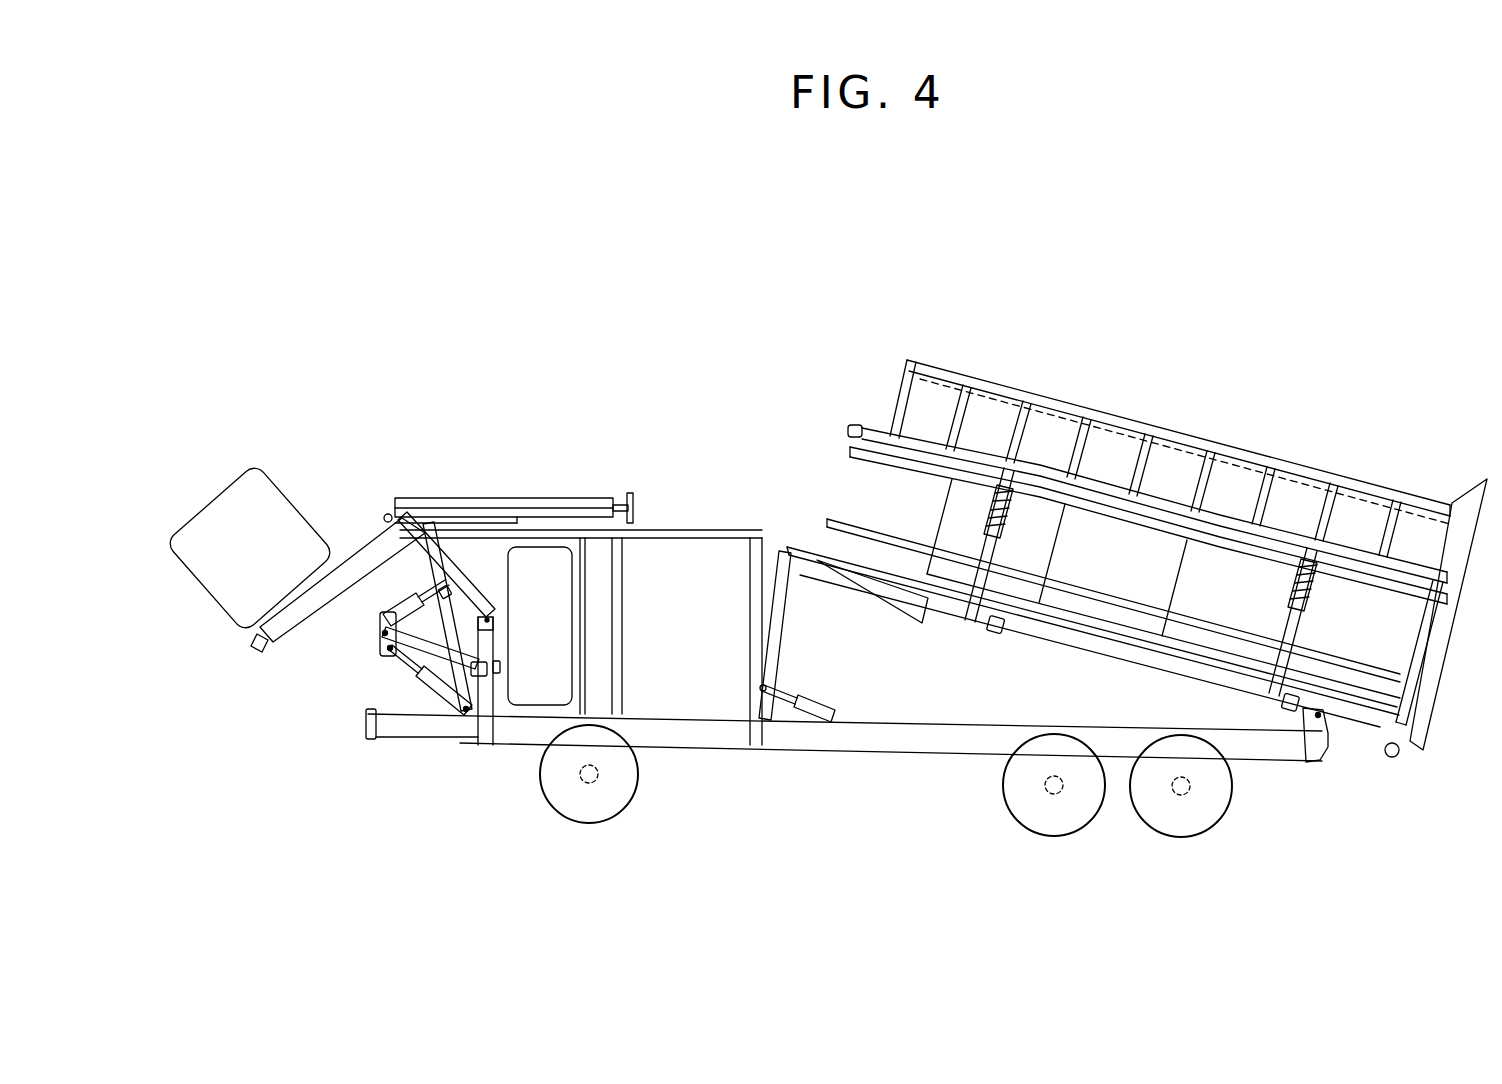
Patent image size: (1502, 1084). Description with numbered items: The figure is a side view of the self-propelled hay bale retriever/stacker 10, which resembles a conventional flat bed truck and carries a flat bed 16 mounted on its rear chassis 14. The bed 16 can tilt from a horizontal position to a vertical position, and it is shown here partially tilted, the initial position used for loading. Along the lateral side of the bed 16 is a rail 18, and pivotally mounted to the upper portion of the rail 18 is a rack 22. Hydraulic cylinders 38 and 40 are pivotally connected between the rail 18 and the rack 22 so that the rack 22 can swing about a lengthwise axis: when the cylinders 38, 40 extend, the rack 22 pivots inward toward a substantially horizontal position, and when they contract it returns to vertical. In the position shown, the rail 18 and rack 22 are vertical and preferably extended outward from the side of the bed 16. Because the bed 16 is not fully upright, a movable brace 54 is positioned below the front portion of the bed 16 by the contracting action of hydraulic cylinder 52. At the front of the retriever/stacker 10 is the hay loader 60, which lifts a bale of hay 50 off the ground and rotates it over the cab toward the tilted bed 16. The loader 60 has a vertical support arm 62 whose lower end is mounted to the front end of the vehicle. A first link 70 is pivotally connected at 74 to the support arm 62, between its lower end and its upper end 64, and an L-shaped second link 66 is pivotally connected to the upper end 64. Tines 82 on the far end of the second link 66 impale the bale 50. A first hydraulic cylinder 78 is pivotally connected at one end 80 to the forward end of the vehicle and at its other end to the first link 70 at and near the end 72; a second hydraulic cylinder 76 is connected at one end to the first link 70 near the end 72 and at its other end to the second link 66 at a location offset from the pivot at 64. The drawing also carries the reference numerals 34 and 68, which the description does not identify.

The self-propelled hay bale retriever/stacker 10 is at (736, 300).
The rear chassis 14 is at (847, 740).
The flat bed 16 is at (1240, 680).
The rail 18 is at (1073, 587).
The rack 22 is at (1063, 402).
The tailgate 34 is at (1433, 663).
The hydraulic cylinder 38 is at (997, 497).
The hydraulic cylinder 40 is at (1304, 588).
The bale of hay 50 is at (256, 478).
The hydraulic cylinder 52 is at (804, 693).
The movable brace 54 is at (776, 568).
The hay loader 60 is at (418, 462).
The vertical support arm 62 is at (482, 746).
The upper end of the support arm 64 is at (498, 527).
The L-shaped second link 66 is at (397, 550).
The boom link 68 is at (479, 556).
The first link 70 is at (392, 658).
The end of the first link 72 is at (384, 636).
The pivotal connection 74 is at (497, 667).
The second hydraulic cylinder 76 is at (445, 502).
The first hydraulic cylinder 78 is at (443, 708).
The end of the first hydraulic cylinder 80 is at (458, 712).
The tines 82 is at (189, 523).